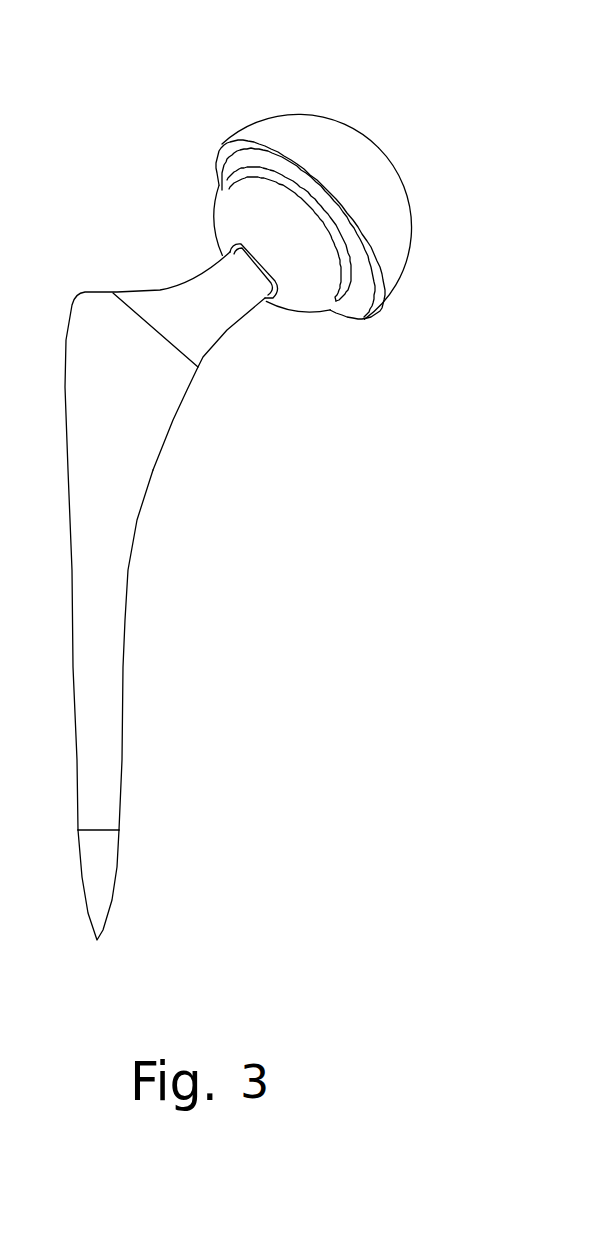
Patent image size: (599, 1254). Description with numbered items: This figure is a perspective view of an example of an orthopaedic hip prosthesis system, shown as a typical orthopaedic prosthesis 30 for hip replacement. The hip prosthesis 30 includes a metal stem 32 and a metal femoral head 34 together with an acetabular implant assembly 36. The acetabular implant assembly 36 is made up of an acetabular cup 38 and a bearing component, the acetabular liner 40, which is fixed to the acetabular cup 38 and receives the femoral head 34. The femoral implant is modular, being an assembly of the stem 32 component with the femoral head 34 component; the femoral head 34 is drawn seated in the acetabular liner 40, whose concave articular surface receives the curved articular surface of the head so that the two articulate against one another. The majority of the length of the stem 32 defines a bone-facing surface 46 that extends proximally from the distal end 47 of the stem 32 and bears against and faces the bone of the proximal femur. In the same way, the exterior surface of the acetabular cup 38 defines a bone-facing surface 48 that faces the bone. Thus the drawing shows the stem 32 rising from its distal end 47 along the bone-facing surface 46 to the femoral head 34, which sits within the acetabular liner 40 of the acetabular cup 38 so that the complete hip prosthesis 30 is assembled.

The orthopaedic prosthesis 30 is at (192, 128).
The stem 32 is at (112, 637).
The femoral head 34 is at (299, 306).
The acetabular implant assembly 36 is at (313, 124).
The acetabular cup 38 is at (402, 253).
The acetabular liner 40 is at (360, 297).
The bone-facing surface 46 is at (113, 558).
The distal end 47 is at (99, 938).
The bone-facing surface 48 is at (390, 165).